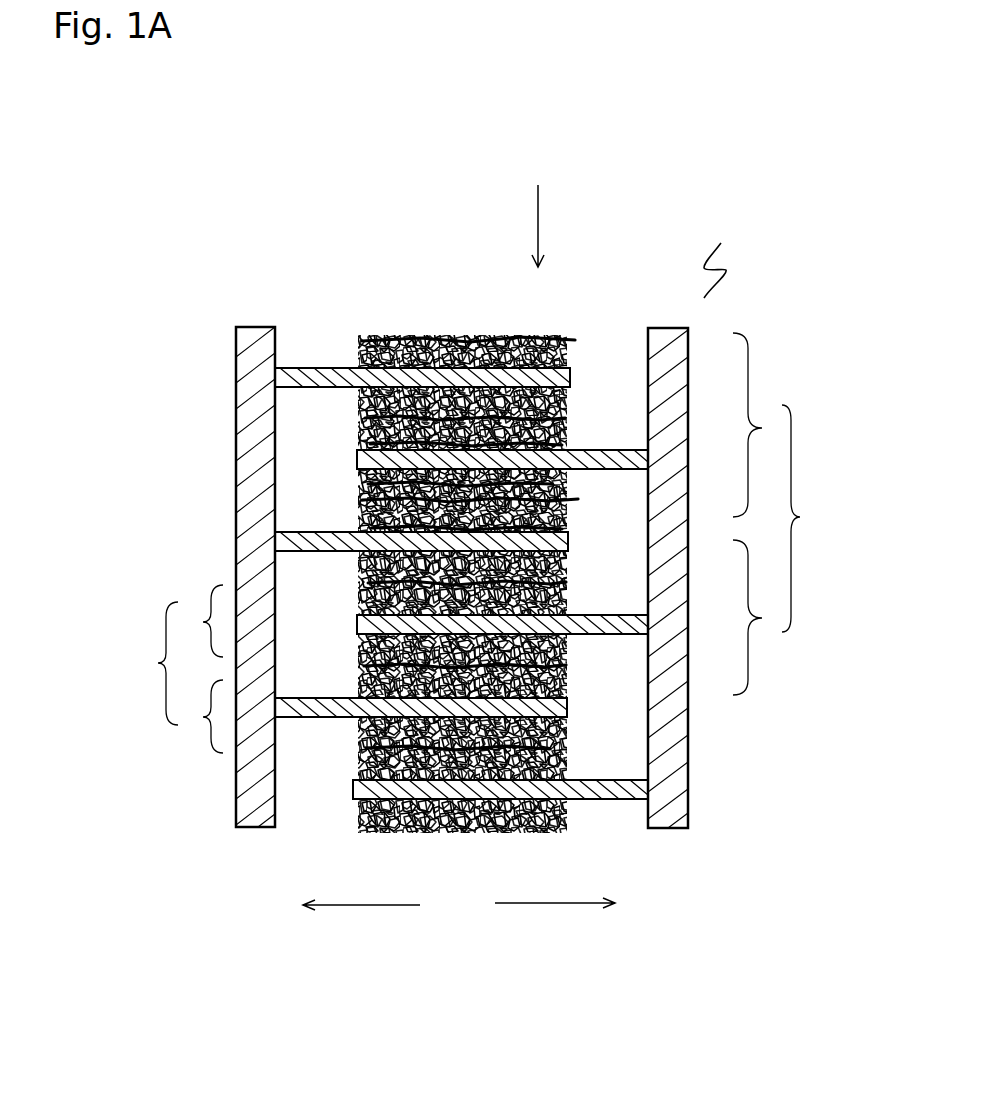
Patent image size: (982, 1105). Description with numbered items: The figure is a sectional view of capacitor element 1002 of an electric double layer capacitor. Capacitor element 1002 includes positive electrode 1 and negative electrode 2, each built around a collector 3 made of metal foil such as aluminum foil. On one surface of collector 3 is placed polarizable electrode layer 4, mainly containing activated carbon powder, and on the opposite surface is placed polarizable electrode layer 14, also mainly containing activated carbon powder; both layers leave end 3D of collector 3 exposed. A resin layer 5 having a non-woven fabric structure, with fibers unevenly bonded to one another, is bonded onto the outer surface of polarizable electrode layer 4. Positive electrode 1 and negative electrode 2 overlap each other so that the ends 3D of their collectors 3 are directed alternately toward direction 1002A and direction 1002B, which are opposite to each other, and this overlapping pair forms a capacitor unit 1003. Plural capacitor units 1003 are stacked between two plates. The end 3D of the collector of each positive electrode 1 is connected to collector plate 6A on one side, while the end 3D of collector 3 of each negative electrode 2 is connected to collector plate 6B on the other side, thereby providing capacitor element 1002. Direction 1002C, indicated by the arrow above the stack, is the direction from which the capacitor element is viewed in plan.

The positive electrode 1 is at (482, 495).
The negative electrode 2 is at (482, 646).
The collector 3 is at (627, 465).
The end of collector 3D is at (642, 457).
The polarizable electrode layer 4 is at (563, 443).
The resin layer 5 is at (562, 422).
The polarizable electrode layer 14 is at (552, 483).
The collector plate 6A is at (672, 818).
The collector plate 6B is at (253, 815).
The capacitor element 1002 is at (729, 255).
The direction 1002A is at (535, 903).
The direction 1002B is at (340, 905).
The direction 1002C is at (538, 240).
The capacitor unit 1003 is at (480, 565).